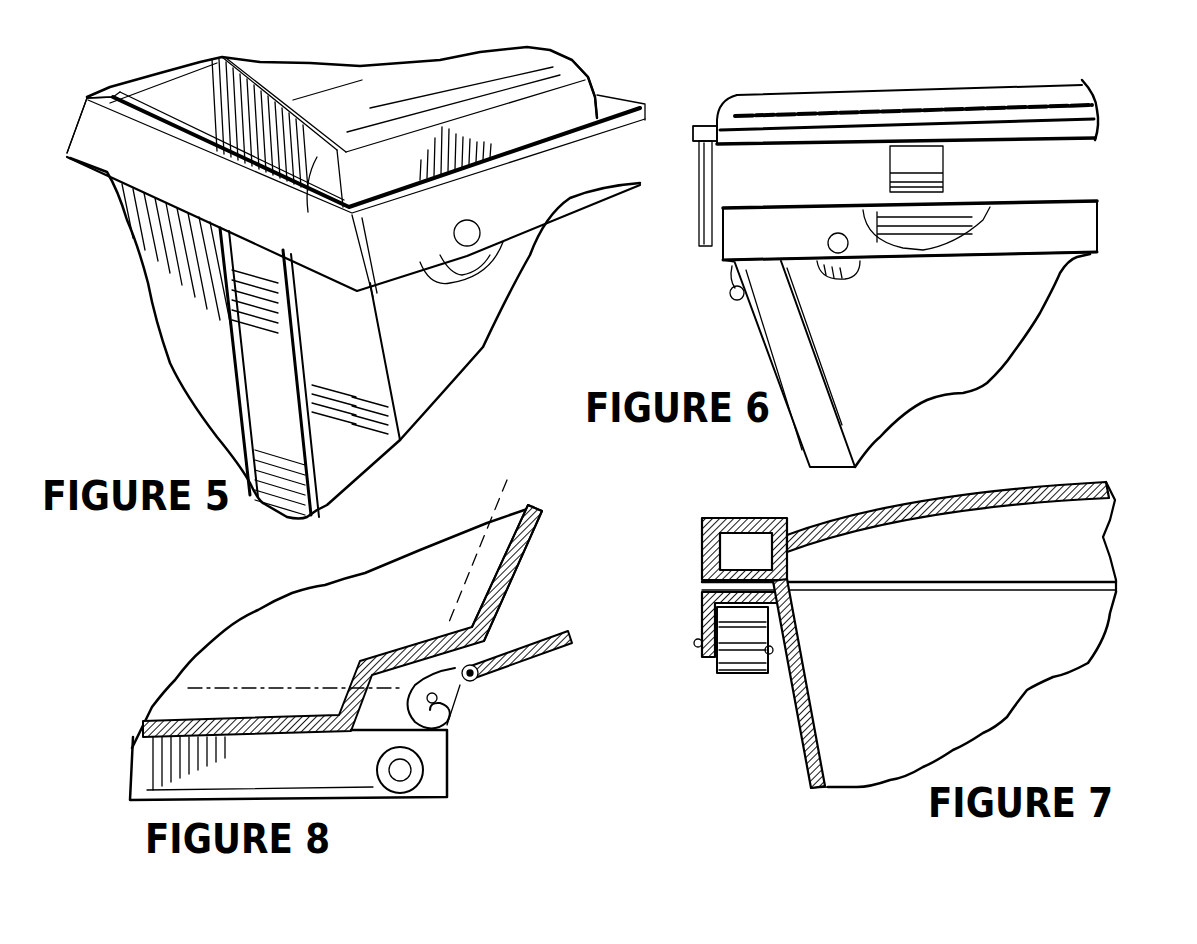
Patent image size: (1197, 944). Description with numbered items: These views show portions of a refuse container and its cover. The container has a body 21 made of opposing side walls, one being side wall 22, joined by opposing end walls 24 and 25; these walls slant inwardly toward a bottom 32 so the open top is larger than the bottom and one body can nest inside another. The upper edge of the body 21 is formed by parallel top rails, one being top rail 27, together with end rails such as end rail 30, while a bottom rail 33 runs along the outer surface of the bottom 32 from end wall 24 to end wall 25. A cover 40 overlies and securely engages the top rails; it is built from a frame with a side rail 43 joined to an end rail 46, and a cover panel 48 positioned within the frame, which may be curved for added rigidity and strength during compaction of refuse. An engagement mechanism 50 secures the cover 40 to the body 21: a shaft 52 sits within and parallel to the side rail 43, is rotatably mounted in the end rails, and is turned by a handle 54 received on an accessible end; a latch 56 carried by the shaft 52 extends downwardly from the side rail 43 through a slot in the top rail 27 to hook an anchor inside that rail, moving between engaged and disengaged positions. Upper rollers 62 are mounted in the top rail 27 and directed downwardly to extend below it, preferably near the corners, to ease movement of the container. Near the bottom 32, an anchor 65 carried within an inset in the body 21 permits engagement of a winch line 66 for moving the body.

In FIG. 5, the body 21 is at (150, 398).
In FIG. 6, the body 21 is at (1080, 325).
In FIG. 7, the body 21 is at (786, 785).
In FIG. 8, the body 21 is at (192, 642).
In FIG. 5, the side wall 22 is at (480, 352).
In FIG. 6, the side wall 22 is at (1010, 368).
In FIG. 7, the side wall 22 is at (795, 738).
In FIG. 8, the end wall 24 is at (523, 557).
In FIG. 5, the end wall 25 is at (167, 298).
In FIG. 5, the top rail 27 is at (586, 208).
In FIG. 6, the top rail 27 is at (1100, 237).
In FIG. 7, the top rail 27 is at (702, 617).
In FIG. 5, the end rail 30 is at (100, 152).
In FIG. 8, the end rail 30 is at (405, 790).
In FIG. 8, the bottom 32 is at (235, 717).
In FIG. 8, the bottom rail 33 is at (442, 752).
In FIG. 5, the cover 40 is at (356, 118).
In FIG. 6, the cover 40 is at (868, 92).
In FIG. 7, the cover 40 is at (958, 486).
In FIG. 5, the side rail 43 is at (582, 97).
In FIG. 6, the side rail 43 is at (1097, 120).
In FIG. 7, the side rail 43 is at (702, 532).
In FIG. 5, the end rail 46 is at (318, 197).
In FIG. 5, the cover panel 48 is at (428, 80).
In FIG. 6, the cover panel 48 is at (1020, 92).
In FIG. 7, the cover panel 48 is at (1062, 483).
In FIG. 6, the engagement mechanism 50 is at (694, 98).
In FIG. 6, the shaft 52 is at (718, 115).
In FIG. 6, the handle 54 is at (699, 205).
In FIG. 6, the latch 56 is at (945, 172).
In FIG. 5, the upper roller 62 is at (473, 283).
In FIG. 6, the upper roller 62 is at (852, 275).
In FIG. 7, the upper roller 62 is at (725, 678).
In FIG. 8, the anchor 65 is at (458, 697).
In FIG. 8, the winch line 66 is at (530, 640).